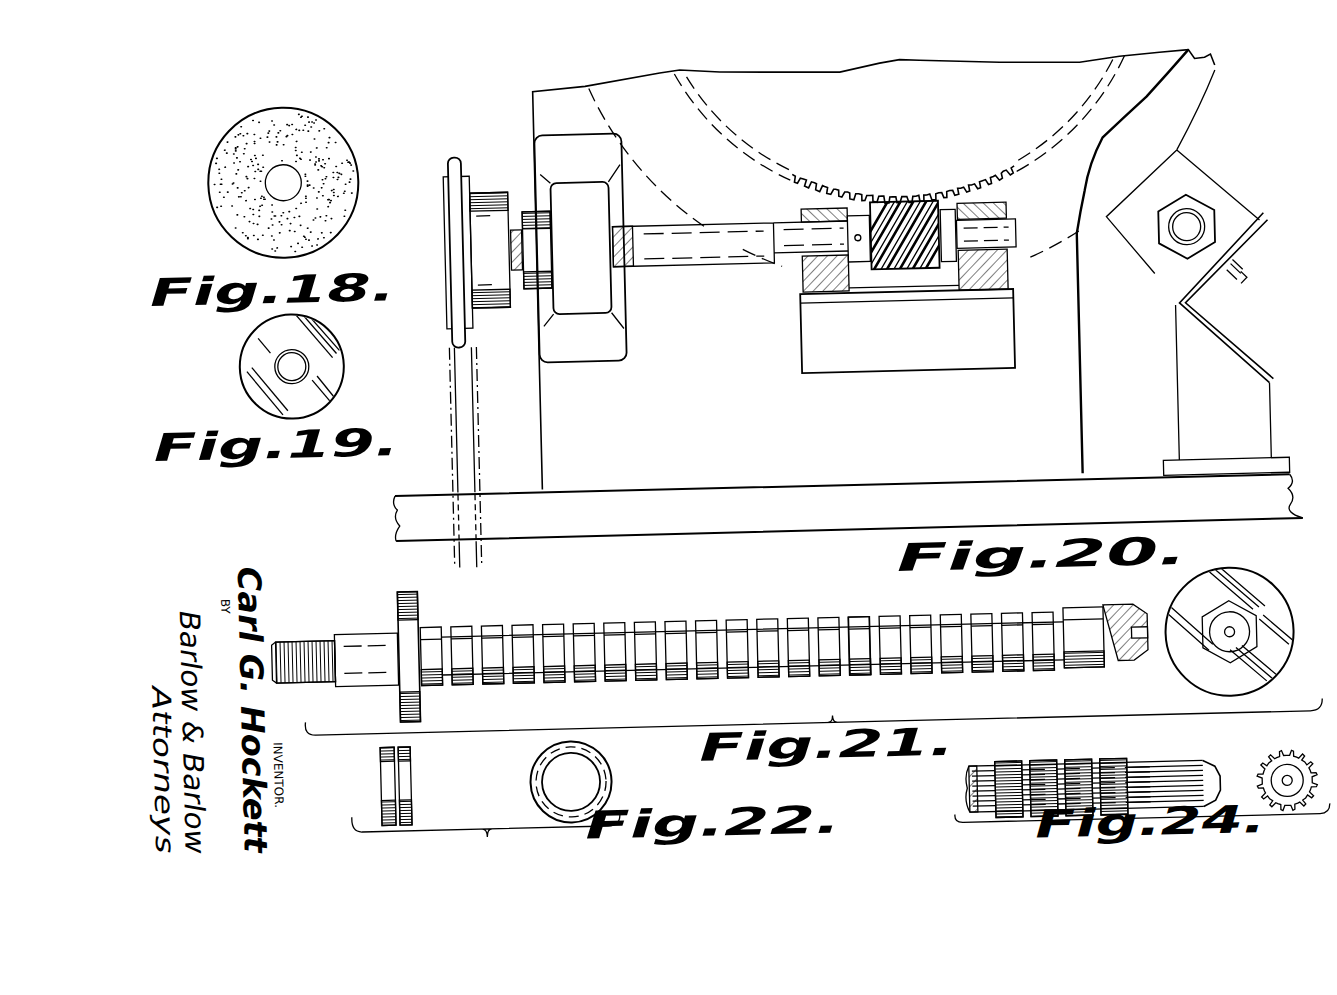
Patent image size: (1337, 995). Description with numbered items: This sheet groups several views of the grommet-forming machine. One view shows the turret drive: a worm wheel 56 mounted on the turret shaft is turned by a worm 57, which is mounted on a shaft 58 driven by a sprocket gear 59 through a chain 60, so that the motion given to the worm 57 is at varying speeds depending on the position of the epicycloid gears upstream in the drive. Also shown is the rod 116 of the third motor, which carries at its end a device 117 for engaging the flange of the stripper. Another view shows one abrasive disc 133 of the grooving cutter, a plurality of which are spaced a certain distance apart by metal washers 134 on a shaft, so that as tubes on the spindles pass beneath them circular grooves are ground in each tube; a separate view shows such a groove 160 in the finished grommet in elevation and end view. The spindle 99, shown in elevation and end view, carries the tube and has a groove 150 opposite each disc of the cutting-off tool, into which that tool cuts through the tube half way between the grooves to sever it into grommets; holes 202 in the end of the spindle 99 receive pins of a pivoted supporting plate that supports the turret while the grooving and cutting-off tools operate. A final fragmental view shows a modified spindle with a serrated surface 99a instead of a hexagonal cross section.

In FIG. 18, the abrasive disc 133 is at (354, 159).
In FIG. 19, the metal washer 134 is at (334, 357).
In FIG. 20, the worm wheel 56 is at (830, 200).
In FIG. 20, the worm 57 is at (934, 218).
In FIG. 20, the shaft 58 is at (712, 273).
In FIG. 20, the sprocket gear 59 is at (458, 312).
In FIG. 20, the chain 60 is at (478, 420).
In FIG. 20, the rod 116 is at (1199, 246).
In FIG. 20, the device 117 is at (1199, 190).
In FIG. 21, the spindle 99 is at (679, 613).
In FIG. 21, the groove 150 is at (837, 626).
In FIG. 21, the hole 202 is at (1135, 680).
In FIG. 22, the groove 160 is at (373, 782).
In FIG. 24, the serrated surface spindle 99a is at (1283, 772).